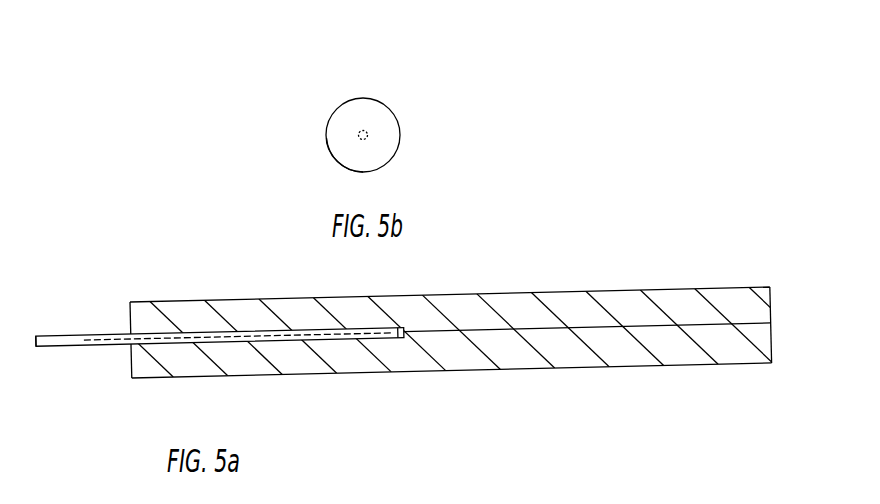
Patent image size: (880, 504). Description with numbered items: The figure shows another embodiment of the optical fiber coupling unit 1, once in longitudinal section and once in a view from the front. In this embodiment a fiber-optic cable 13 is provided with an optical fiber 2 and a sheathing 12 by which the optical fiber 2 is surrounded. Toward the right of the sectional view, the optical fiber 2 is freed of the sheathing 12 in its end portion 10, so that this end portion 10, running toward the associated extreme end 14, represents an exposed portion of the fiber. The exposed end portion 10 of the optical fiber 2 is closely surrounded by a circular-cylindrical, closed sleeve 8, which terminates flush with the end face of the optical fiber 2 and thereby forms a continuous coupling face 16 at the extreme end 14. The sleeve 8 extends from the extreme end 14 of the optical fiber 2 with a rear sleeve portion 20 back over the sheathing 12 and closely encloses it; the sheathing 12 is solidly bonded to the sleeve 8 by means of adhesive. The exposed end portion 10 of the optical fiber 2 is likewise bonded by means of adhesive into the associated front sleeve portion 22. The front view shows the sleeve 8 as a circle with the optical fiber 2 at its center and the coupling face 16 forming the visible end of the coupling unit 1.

In FIG. 5A, the optical fiber coupling unit 1 is at (431, 318).
In FIG. 5B, the optical fiber coupling unit 1 is at (383, 104).
In FIG. 5A, the optical fiber 2 is at (583, 335).
In FIG. 5B, the optical fiber 2 is at (362, 137).
In FIG. 5A, the sleeve 8 is at (517, 357).
In FIG. 5B, the sleeve 8 is at (388, 122).
In FIG. 5A, the end portion 10 is at (555, 330).
In FIG. 5A, the sheathing 12 is at (65, 344).
In FIG. 5A, the fiber-optic cable 13 is at (120, 350).
In FIG. 5A, the extreme end 14 is at (770, 327).
In FIG. 5A, the coupling face 16 is at (768, 295).
In FIG. 5B, the coupling face 16 is at (383, 153).
In FIG. 5A, the rear sleeve portion 20 is at (315, 363).
In FIG. 5A, the front sleeve portion 22 is at (660, 353).